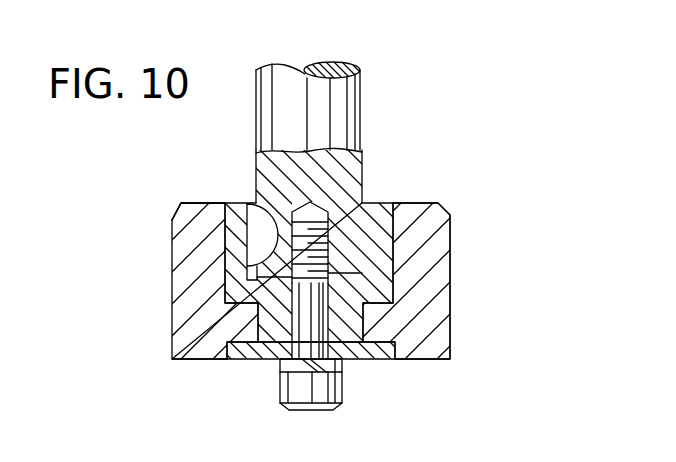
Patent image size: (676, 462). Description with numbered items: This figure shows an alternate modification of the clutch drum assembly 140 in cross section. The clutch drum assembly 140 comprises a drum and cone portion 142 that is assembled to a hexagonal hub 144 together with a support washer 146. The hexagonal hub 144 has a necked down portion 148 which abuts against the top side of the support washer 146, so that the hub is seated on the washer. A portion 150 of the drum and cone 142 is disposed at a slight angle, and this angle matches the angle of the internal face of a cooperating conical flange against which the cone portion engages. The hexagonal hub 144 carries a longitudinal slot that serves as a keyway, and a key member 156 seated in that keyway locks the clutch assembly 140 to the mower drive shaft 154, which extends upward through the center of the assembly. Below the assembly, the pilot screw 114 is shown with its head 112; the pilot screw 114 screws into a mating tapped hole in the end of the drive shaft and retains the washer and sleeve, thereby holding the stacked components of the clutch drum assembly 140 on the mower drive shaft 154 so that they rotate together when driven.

The clutch drum assembly 140 is at (468, 240).
The drum and cone portion 142 is at (175, 292).
The hexagonal hub 144 is at (372, 202).
The support washer 146 is at (240, 355).
The necked down portion 148 is at (272, 328).
The portion of the drum and cone 150 is at (172, 217).
The mower drive shaft 154 is at (362, 103).
The key member 156 is at (257, 215).
The head of pilot screw 112 is at (342, 388).
The pilot screw 114 is at (342, 363).